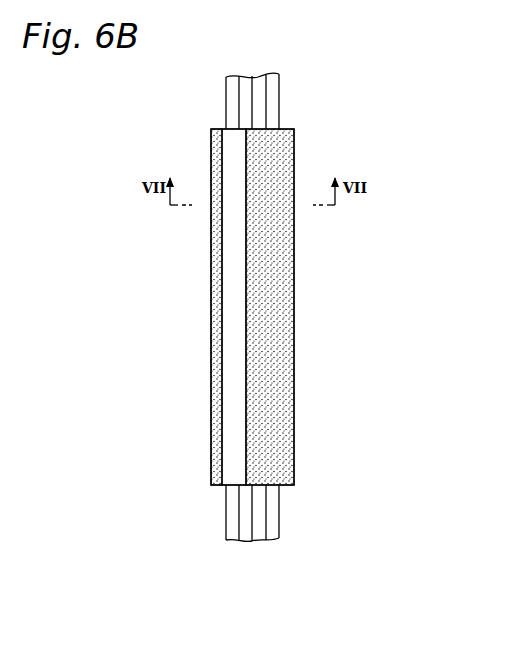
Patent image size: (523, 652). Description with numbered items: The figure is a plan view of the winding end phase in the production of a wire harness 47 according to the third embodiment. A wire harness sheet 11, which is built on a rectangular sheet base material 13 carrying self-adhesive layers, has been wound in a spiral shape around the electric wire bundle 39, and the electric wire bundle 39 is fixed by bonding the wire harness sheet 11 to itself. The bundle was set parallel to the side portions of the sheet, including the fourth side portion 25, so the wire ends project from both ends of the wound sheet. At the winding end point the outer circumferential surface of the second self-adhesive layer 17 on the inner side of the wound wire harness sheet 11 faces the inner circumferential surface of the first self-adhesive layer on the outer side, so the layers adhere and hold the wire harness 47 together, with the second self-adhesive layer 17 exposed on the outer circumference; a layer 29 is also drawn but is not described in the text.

The wire harness 47 is at (204, 100).
The wire harness sheet 11 is at (175, 392).
The sheet base material 13 is at (286, 128).
The electric wire bundle 39 is at (226, 518).
The fourth side portion 25 is at (220, 346).
The conductive layer 29 is at (233, 262).
The second self-adhesive layer 17 is at (270, 292).